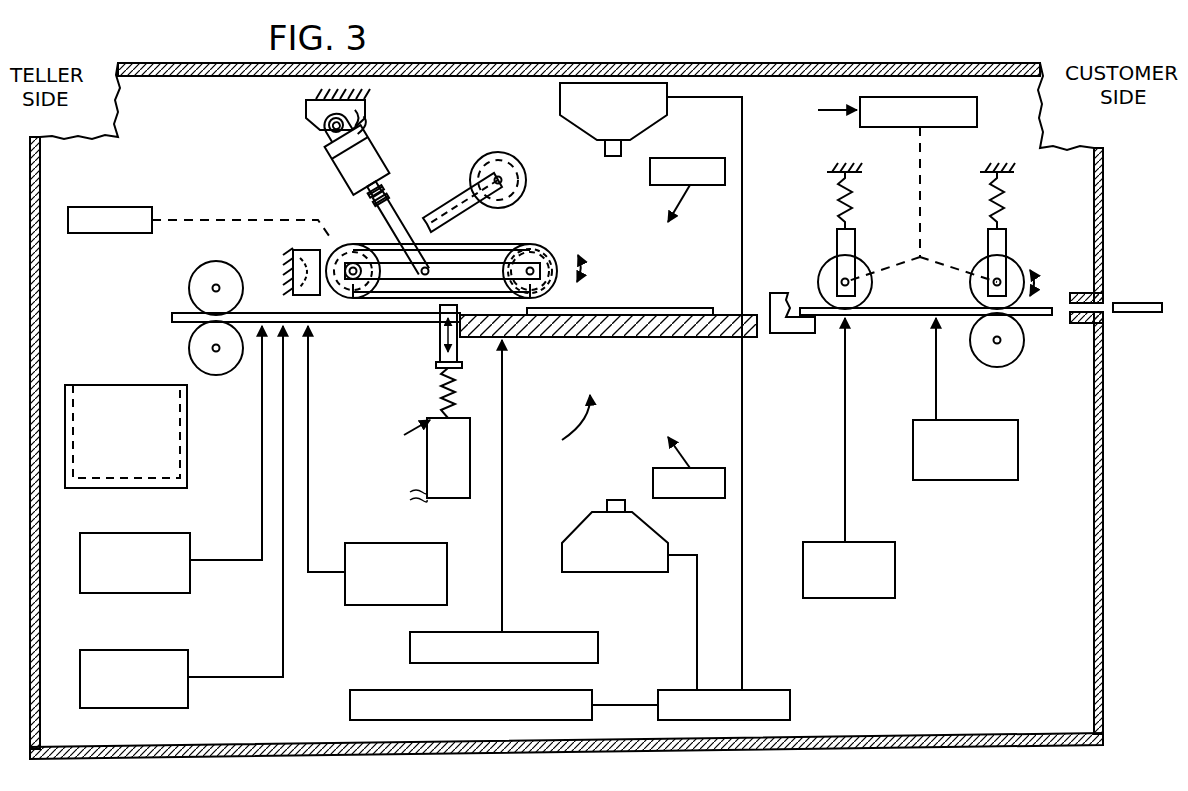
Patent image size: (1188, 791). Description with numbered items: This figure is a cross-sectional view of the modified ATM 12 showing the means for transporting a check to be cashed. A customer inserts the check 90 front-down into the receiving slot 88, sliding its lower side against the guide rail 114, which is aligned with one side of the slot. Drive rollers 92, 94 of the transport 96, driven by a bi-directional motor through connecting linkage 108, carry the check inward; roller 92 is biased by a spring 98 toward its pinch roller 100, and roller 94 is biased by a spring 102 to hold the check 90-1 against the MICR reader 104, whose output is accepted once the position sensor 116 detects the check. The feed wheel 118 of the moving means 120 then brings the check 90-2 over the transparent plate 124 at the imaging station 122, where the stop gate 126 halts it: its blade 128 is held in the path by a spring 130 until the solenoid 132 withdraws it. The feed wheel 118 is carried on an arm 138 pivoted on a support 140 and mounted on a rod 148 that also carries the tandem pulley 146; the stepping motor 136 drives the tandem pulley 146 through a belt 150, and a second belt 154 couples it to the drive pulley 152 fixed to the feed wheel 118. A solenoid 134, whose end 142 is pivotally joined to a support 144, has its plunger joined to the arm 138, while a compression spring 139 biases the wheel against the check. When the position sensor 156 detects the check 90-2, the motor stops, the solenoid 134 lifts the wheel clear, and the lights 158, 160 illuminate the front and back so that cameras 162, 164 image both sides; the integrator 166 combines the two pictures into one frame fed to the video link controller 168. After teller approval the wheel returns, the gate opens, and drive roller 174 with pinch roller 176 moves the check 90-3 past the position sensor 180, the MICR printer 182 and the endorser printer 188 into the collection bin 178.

The ATM 12 is at (857, 55).
The receiving slot 88 is at (1090, 303).
The check 90 is at (1135, 312).
The check 90-1 is at (910, 315).
The check 90-2 is at (648, 308).
The check 90-3 is at (172, 313).
The drive roller 92 is at (992, 242).
The drive roller 94 is at (846, 242).
The transport 96 is at (881, 112).
The spring 98 is at (1000, 200).
The pinch roller 100 is at (1012, 358).
The spring 102 is at (840, 198).
The MICR reader 104 is at (895, 568).
The connecting linkage 108 is at (922, 160).
The guide rail 114 is at (786, 293).
The position sensor 116 is at (990, 480).
The feed wheel 118 is at (565, 255).
The moving means 120 is at (408, 172).
The imaging station 122 is at (546, 486).
The transparent plate 124 is at (665, 337).
The stop gate 126 is at (399, 432).
The blade 128 is at (438, 365).
The spring 130 is at (441, 393).
The solenoid 132 is at (427, 462).
The solenoid 134 is at (325, 137).
The stepping motor 136 is at (110, 207).
The arm 138 is at (532, 245).
The compression spring 139 is at (378, 196).
The support 140 is at (310, 250).
The end 142 is at (336, 125).
The support 144 is at (306, 110).
The tandem pulley 146 is at (356, 292).
The rod 148 is at (350, 272).
The belt 150 is at (228, 205).
The drive pulley 152 is at (532, 292).
The belt 154 is at (412, 300).
The position sensor 156 is at (552, 632).
The light 158 is at (685, 498).
The light 160 is at (676, 158).
The camera 162 is at (590, 530).
The camera 164 is at (560, 102).
The integrator 166 is at (770, 690).
The video link controller 168 is at (360, 690).
The drive roller 174 is at (203, 283).
The pinch roller 176 is at (200, 347).
The collection bin 178 is at (100, 390).
The position sensor 180 is at (393, 543).
The MICR printer 182 is at (178, 655).
The endorser printer 188 is at (188, 533).